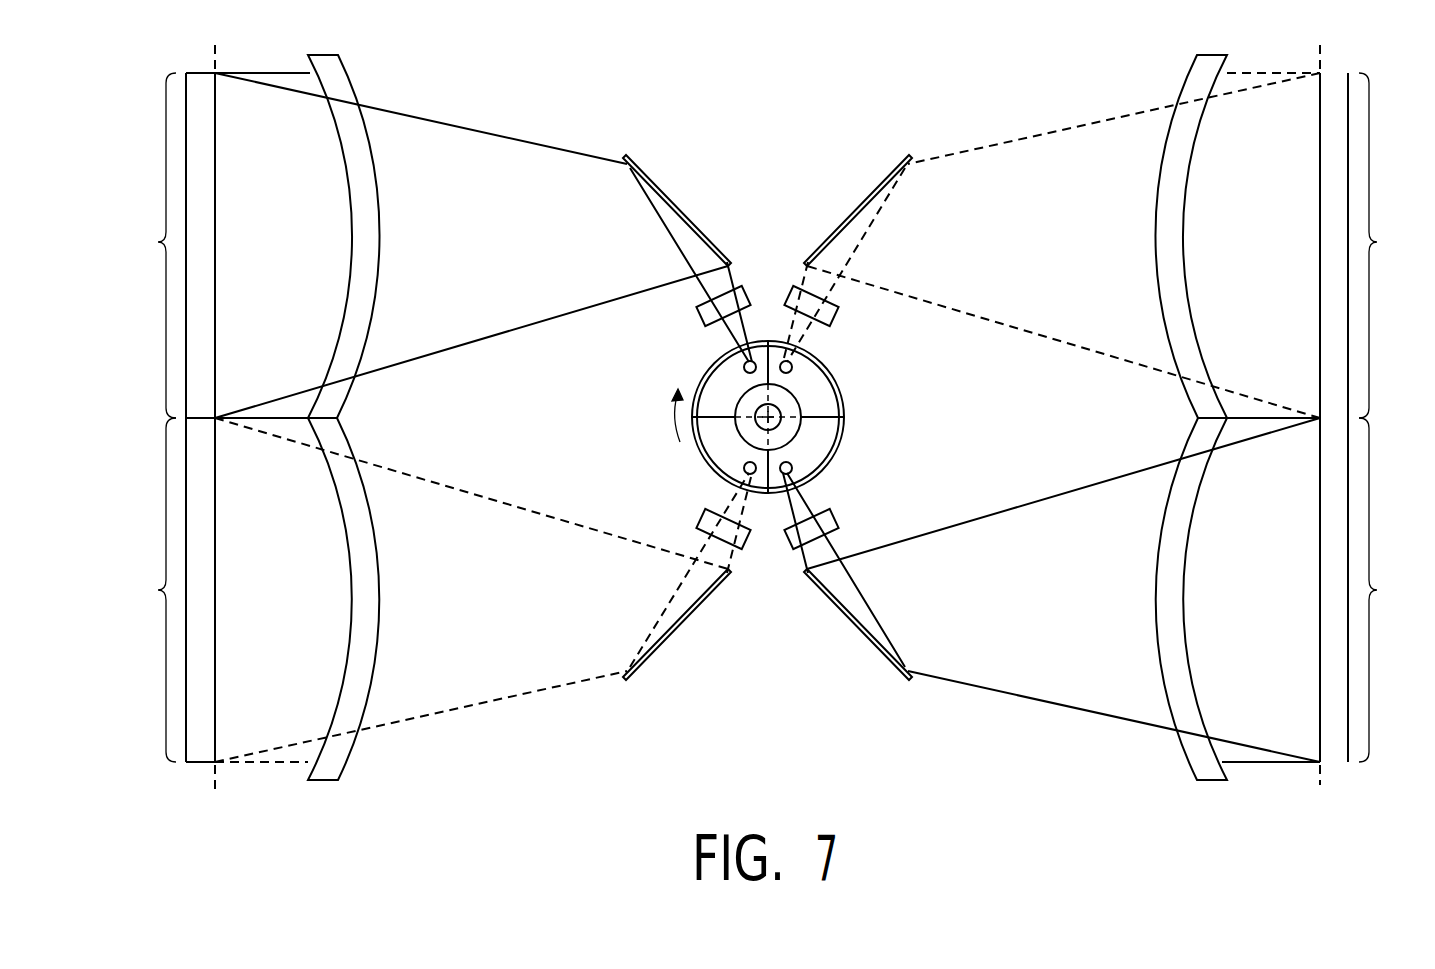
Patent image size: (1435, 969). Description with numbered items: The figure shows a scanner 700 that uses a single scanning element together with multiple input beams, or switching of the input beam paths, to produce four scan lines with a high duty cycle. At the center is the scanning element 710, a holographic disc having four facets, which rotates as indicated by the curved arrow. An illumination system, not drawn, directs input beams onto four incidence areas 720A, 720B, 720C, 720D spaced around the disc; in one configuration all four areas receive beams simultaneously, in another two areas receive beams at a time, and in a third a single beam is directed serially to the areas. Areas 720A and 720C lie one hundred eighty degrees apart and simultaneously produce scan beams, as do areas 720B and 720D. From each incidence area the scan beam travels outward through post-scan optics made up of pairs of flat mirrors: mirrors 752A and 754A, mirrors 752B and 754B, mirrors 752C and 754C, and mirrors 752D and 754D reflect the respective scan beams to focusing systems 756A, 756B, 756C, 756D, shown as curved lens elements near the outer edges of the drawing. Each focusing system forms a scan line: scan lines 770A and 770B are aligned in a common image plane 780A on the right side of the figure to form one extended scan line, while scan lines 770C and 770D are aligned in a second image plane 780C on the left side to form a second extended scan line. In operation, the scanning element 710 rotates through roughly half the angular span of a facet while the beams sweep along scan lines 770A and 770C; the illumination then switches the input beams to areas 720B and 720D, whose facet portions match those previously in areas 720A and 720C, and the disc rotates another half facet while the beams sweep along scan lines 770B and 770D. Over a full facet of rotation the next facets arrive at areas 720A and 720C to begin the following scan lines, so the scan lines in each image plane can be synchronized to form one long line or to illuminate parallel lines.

The scanner 700 is at (545, 81).
The scanning element 710 is at (846, 419).
The incidence area 720A is at (793, 468).
The incidence area 720B is at (793, 367).
The incidence area 720C is at (743, 367).
The incidence area 720D is at (743, 468).
The flat mirror 752A is at (838, 522).
The flat mirror 752B is at (838, 310).
The flat mirror 752C is at (697, 310).
The flat mirror 752D is at (697, 522).
The flat mirror 754A is at (839, 612).
The flat mirror 754B is at (836, 225).
The flat mirror 754C is at (698, 225).
The flat mirror 754D is at (697, 612).
The focusing system 756A is at (1135, 601).
The focusing system 756B is at (1135, 240).
The focusing system 756C is at (400, 240).
The focusing system 756D is at (400, 601).
The scan line 770A is at (1328, 590).
The scan line 770B is at (1331, 245).
The scan line 770C is at (203, 245).
The scan line 770D is at (202, 590).
The image plane 780A is at (1316, 786).
The image plane 780C is at (217, 52).